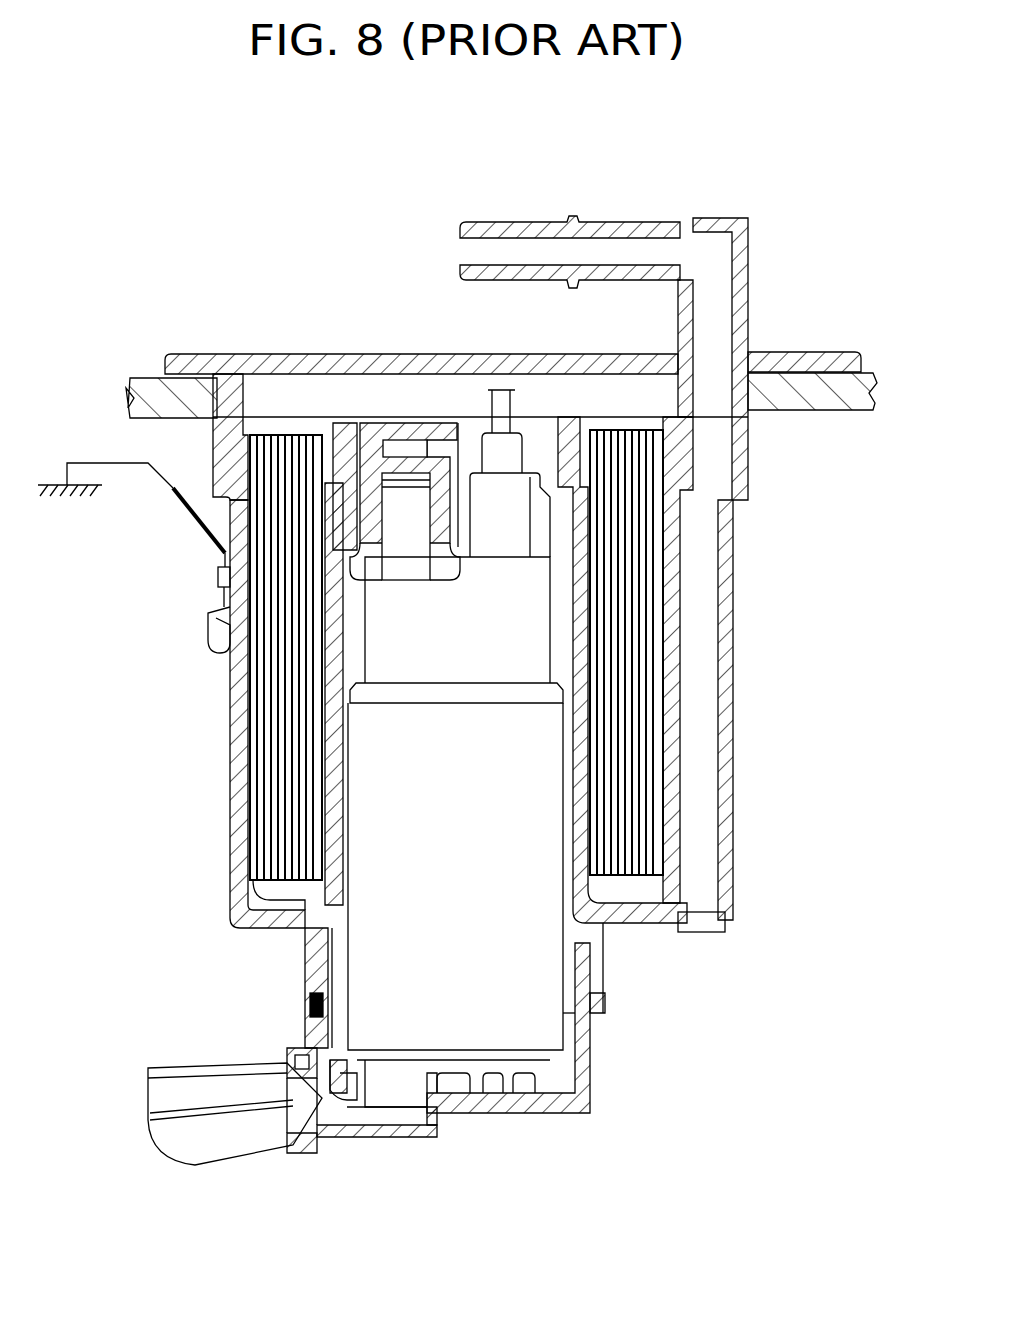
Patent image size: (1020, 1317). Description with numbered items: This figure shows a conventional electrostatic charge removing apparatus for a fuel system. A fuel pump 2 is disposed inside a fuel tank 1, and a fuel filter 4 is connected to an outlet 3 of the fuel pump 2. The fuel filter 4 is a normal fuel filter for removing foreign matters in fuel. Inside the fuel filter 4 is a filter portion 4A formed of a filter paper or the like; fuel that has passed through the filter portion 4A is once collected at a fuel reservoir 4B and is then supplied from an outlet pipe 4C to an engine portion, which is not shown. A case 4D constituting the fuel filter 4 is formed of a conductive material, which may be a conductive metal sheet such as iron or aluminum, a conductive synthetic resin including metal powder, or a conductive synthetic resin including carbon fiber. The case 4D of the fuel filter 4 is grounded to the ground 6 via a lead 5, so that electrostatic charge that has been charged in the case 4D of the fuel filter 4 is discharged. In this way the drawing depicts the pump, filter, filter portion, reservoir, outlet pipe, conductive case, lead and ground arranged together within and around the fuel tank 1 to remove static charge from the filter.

The fuel tank 1 is at (150, 393).
The fuel pump 2 is at (395, 1003).
The outlet 3 is at (407, 510).
The fuel filter 4 is at (247, 742).
The filter portion 4A is at (280, 817).
The fuel reservoir 4B is at (282, 900).
The outlet pipe 4C is at (505, 232).
The case 4D is at (230, 880).
The lead 5 is at (180, 500).
The ground 6 is at (48, 490).